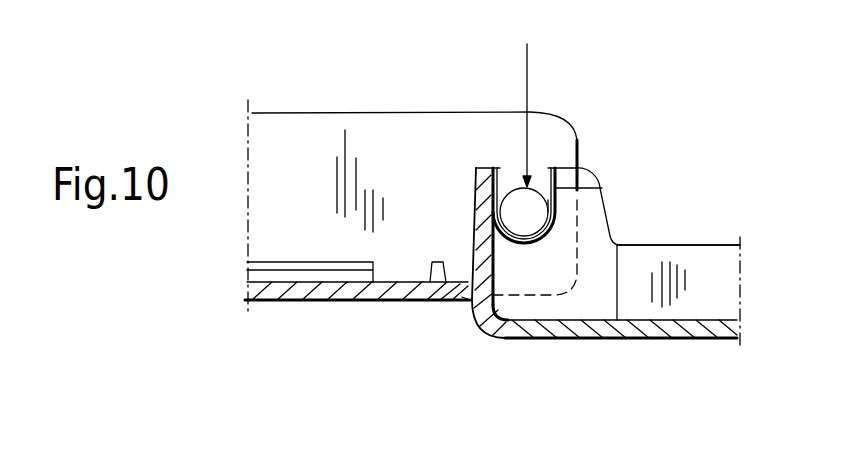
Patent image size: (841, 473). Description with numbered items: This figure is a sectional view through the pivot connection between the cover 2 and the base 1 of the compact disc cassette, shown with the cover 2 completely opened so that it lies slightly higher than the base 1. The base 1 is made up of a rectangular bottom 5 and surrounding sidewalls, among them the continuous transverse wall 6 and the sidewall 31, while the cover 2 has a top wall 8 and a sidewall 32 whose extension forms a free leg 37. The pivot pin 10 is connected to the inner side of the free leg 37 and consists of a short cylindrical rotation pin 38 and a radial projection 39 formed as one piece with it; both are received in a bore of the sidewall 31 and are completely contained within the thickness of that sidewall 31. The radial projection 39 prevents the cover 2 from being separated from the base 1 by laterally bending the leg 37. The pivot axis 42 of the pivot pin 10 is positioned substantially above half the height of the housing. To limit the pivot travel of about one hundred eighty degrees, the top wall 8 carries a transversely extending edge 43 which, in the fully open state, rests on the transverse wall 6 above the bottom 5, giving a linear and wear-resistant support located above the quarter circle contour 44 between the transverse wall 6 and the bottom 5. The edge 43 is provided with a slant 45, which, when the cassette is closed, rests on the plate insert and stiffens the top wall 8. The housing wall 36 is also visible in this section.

The base 1 is at (701, 244).
The cover 2 is at (317, 302).
The bottom 5 is at (695, 327).
The transverse sidewall 6 is at (476, 200).
The top wall 8 is at (381, 301).
The pivot pin 10 is at (525, 97).
The sidewall of the base 31 is at (595, 297).
The sidewall of the cover 32 is at (323, 140).
The housing wall 36 is at (468, 8).
The free leg 37 is at (548, 145).
The rotation pin 38 is at (536, 222).
The radial projection 39 is at (549, 205).
The pivot axis 42 is at (527, 218).
The transversely extending edge 43 is at (462, 297).
The quarter circle contour 44 is at (486, 322).
The slant 45 is at (460, 293).